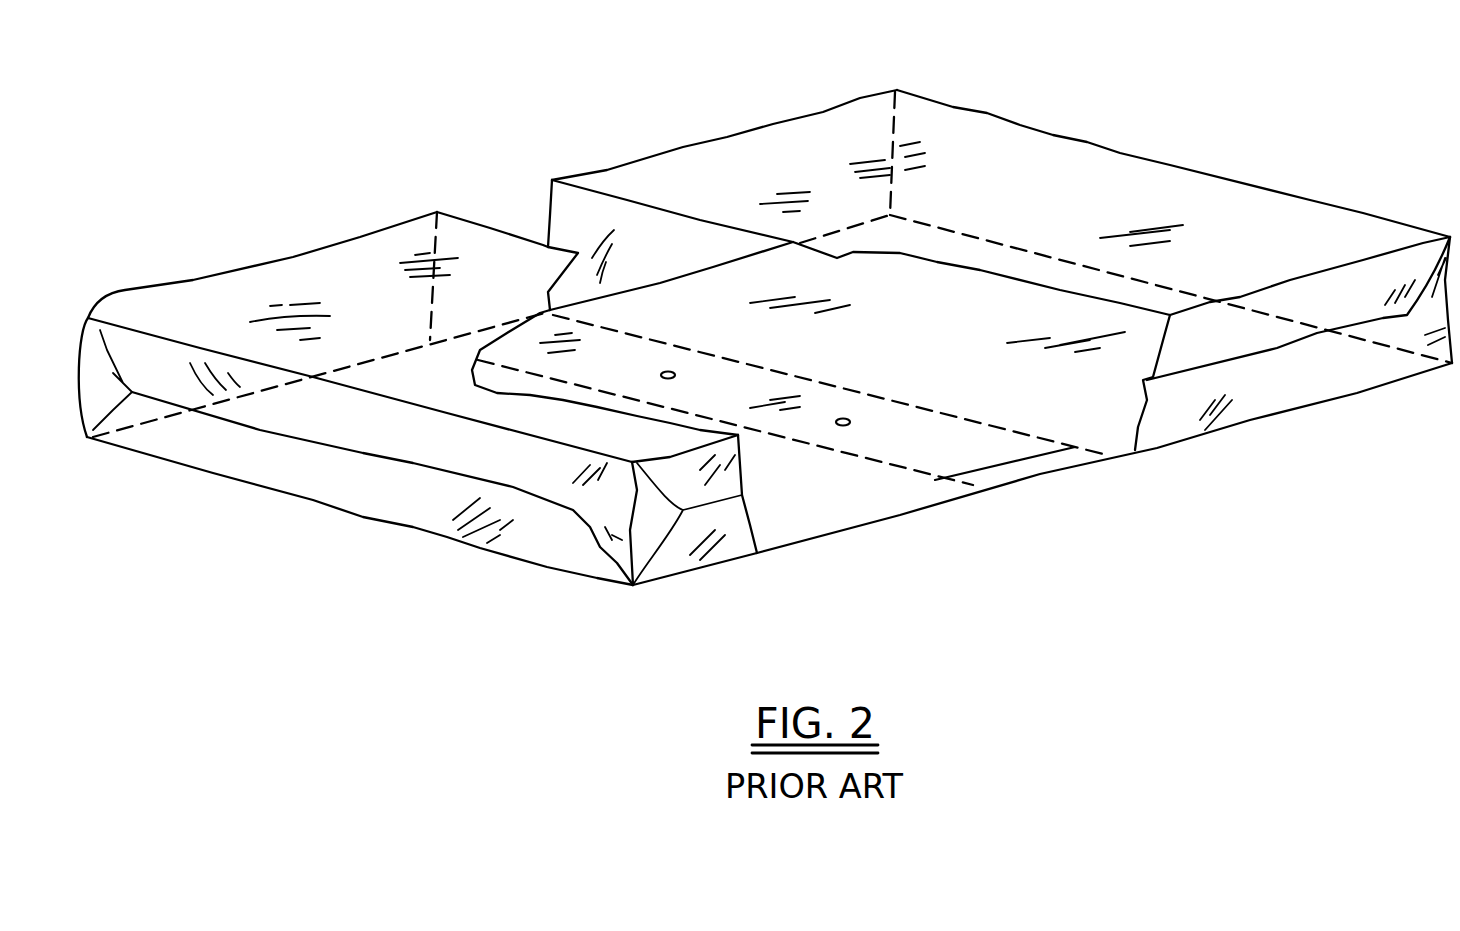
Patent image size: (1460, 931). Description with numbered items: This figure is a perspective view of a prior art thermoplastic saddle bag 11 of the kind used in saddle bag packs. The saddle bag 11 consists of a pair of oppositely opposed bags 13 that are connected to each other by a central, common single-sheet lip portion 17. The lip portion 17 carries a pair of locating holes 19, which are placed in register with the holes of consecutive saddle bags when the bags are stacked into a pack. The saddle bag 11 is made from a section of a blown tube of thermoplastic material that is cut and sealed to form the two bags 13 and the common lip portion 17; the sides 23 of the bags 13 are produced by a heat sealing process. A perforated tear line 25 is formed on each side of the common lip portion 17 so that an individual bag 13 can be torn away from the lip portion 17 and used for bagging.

The thermoplastic saddle bag 11 is at (1145, 82).
The bags 13 is at (320, 258).
The common single-sheet lip portion 17 is at (1027, 452).
The locating holes 19 is at (666, 371).
The sides 23 is at (173, 312).
The perforated tear line 25 is at (935, 477).